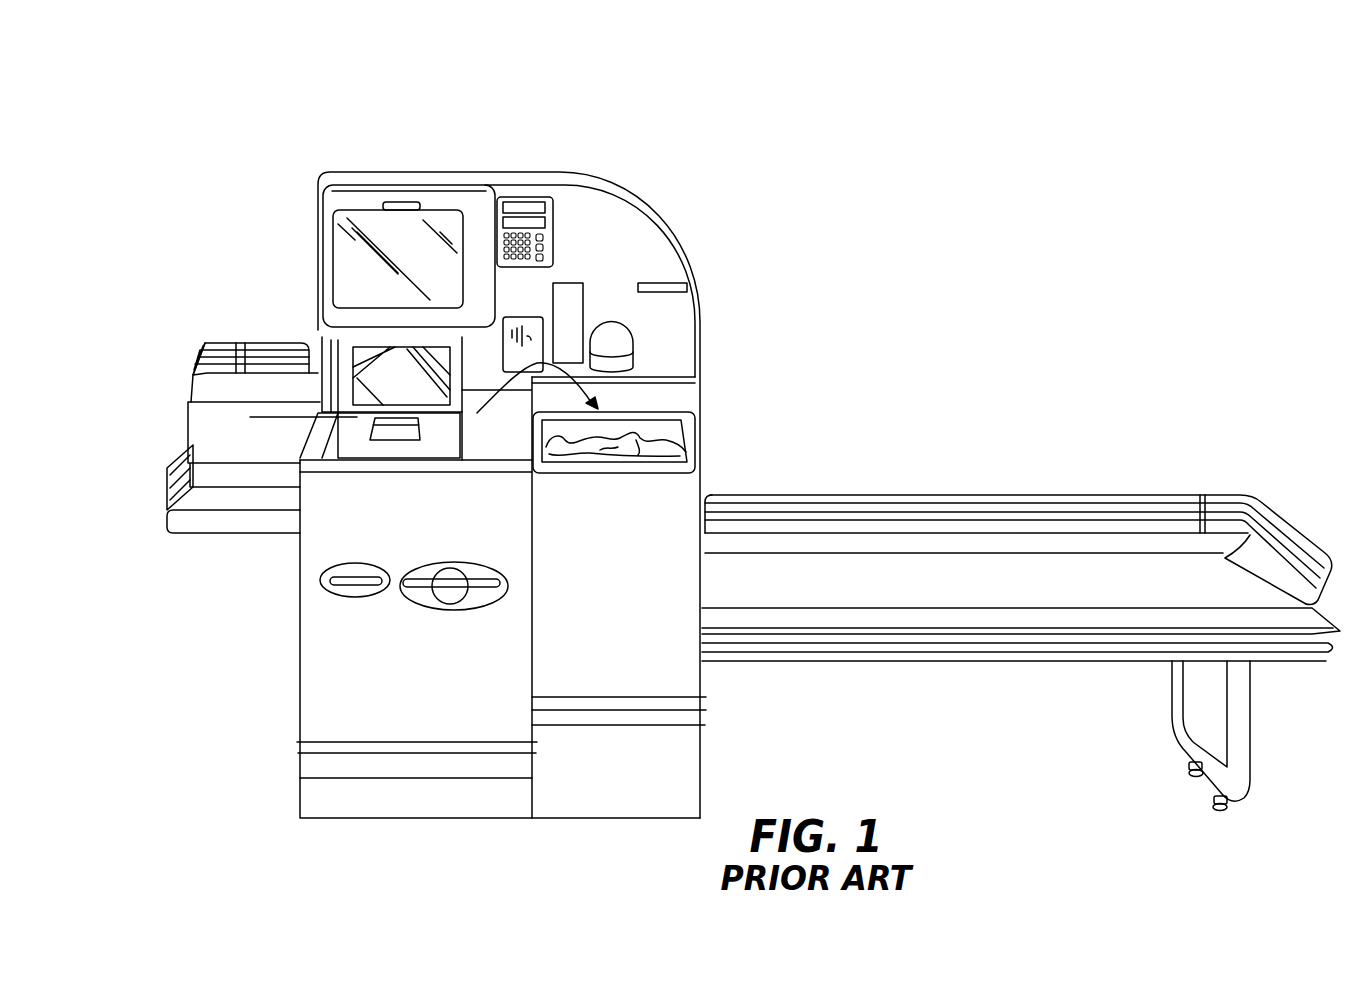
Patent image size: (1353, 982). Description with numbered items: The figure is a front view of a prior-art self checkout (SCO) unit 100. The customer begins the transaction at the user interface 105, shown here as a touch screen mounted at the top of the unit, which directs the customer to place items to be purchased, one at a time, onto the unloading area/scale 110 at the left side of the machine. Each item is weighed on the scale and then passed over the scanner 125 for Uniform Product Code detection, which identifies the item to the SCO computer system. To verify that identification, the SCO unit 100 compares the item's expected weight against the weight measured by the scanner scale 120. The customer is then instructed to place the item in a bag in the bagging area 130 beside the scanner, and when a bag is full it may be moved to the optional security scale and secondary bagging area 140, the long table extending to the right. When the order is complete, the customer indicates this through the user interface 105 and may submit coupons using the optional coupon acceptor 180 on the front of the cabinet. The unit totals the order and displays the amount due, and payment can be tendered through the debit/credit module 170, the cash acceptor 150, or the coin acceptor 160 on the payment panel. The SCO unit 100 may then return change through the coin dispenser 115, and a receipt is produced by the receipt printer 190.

The SCO unit 100 is at (856, 716).
The user interface 105 is at (348, 225).
The unloading area/scale 110 is at (255, 392).
The coin dispenser 115 is at (700, 378).
The scanner scale 120 is at (262, 500).
The scanner 125 is at (387, 393).
The bagging area 130 is at (672, 462).
The security scale and secondary bagging area 140 is at (1060, 567).
The cash acceptor 150 is at (352, 587).
The coin acceptor 160 is at (613, 365).
The debit/credit module 170 is at (535, 232).
The coupon acceptor 180 is at (443, 590).
The receipt printer 190 is at (668, 283).